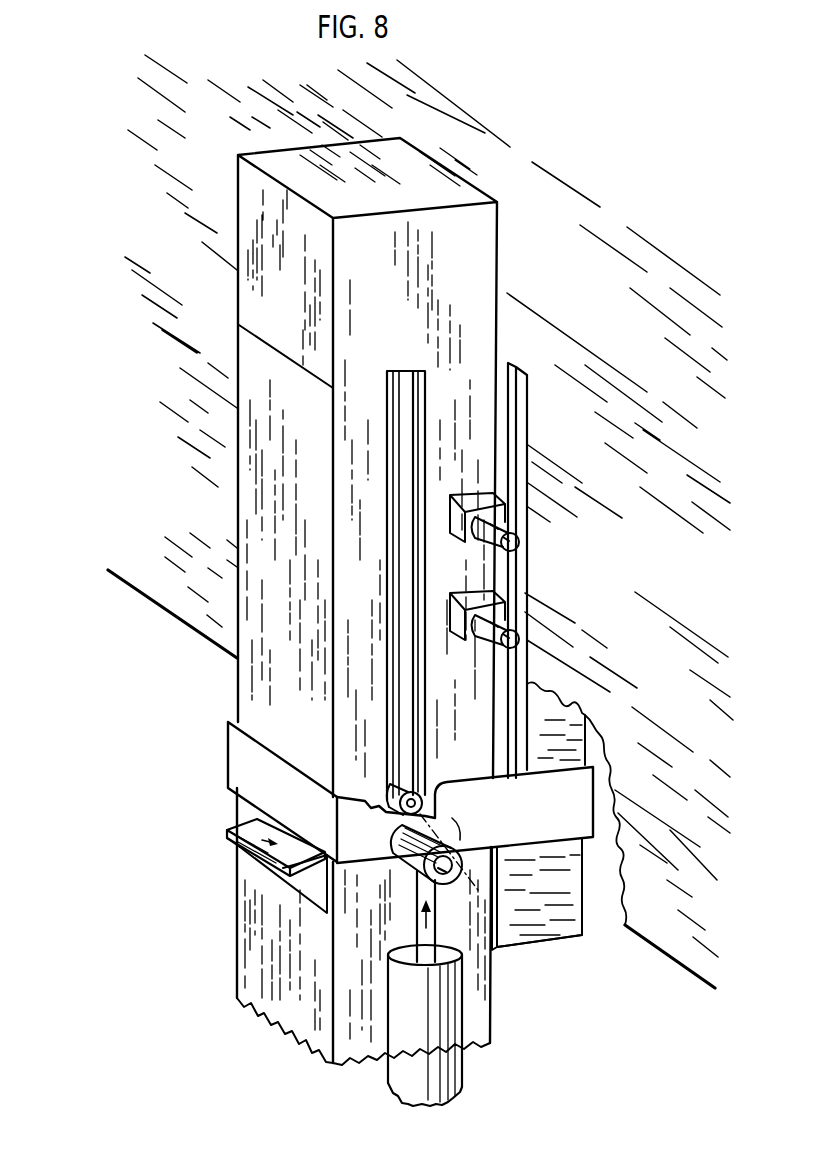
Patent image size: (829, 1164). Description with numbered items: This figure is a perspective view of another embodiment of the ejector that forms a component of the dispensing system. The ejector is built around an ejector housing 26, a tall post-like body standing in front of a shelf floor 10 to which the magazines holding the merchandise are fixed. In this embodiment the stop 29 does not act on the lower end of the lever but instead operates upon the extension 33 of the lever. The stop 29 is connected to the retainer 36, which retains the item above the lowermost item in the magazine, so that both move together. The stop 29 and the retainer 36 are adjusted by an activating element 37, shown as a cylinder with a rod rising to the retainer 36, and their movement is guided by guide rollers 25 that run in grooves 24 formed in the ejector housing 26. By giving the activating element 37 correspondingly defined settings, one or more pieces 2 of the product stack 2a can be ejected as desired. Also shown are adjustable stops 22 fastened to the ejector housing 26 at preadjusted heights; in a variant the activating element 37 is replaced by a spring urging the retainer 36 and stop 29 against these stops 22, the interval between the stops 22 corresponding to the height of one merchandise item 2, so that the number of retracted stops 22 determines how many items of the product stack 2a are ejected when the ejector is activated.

The merchandise item 2 is at (574, 925).
The product stack 2a is at (537, 949).
The shelf floor 10 is at (667, 943).
The adjustable stop 22 is at (519, 545).
The groove 24 is at (415, 370).
The guide roller 25 is at (430, 813).
The ejector housing 26 is at (482, 234).
The stop 29 is at (273, 823).
The extension 33 is at (233, 845).
The retainer 36 is at (515, 790).
The activating element 37 is at (417, 1090).